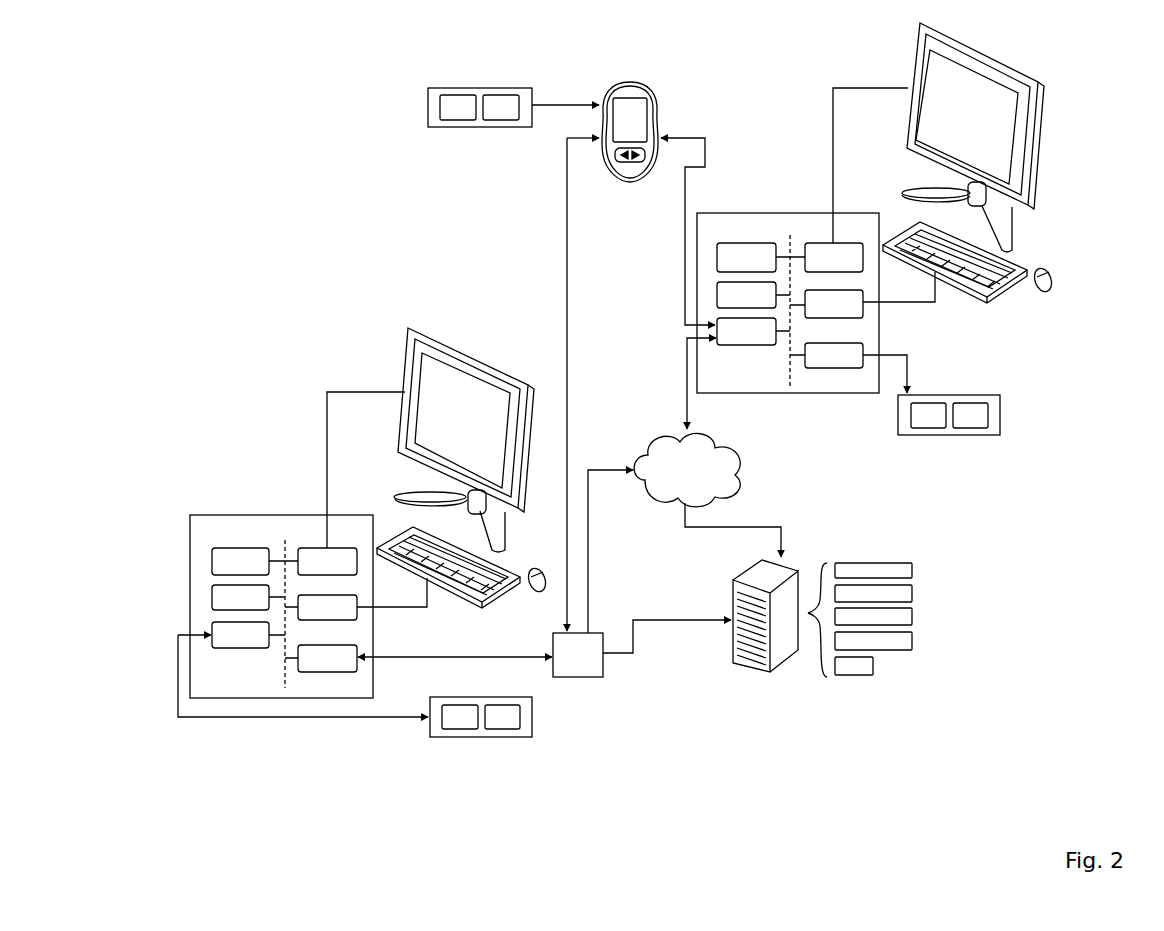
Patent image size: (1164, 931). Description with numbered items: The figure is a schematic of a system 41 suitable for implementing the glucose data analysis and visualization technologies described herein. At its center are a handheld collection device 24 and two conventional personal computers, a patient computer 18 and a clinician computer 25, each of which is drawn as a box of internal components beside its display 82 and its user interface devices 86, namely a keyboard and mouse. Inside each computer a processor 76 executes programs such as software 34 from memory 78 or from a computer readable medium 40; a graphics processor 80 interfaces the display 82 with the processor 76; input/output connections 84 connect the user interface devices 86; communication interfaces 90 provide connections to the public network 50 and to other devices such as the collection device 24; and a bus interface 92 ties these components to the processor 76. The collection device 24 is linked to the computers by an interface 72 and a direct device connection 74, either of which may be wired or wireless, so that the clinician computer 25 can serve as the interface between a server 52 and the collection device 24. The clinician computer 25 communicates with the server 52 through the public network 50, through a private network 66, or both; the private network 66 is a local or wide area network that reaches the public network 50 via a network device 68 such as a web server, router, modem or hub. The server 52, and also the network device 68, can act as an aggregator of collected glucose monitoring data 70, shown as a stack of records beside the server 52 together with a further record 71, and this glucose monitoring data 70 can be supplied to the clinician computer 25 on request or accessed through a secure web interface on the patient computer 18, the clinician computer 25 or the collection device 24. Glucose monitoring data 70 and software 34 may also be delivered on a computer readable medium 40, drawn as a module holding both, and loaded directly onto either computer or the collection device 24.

The system 41 is at (350, 178).
The collection device 24 is at (662, 107).
The interface 72 is at (566, 180).
The direct device connection 74 is at (707, 160).
The computer readable medium 40 is at (440, 88).
The glucose monitoring data 70 is at (460, 95).
The software 34 is at (501, 95).
The data storage 71 is at (874, 668).
The patient computer 18 is at (758, 212).
The clinician computer 25 is at (252, 513).
The processor 76 is at (494, 409).
The graphics processor 80 is at (603, 331).
The memory 78 is at (494, 446).
The input/output connections 84 is at (616, 446).
The communication interfaces 90 is at (477, 517).
The user interface devices 86 is at (1044, 268).
The bus interface 92 is at (789, 362).
The display 82 is at (1012, 70).
The public network 50 is at (744, 456).
The server 52 is at (790, 565).
The network device 68 is at (600, 632).
The private network 66 is at (686, 618).